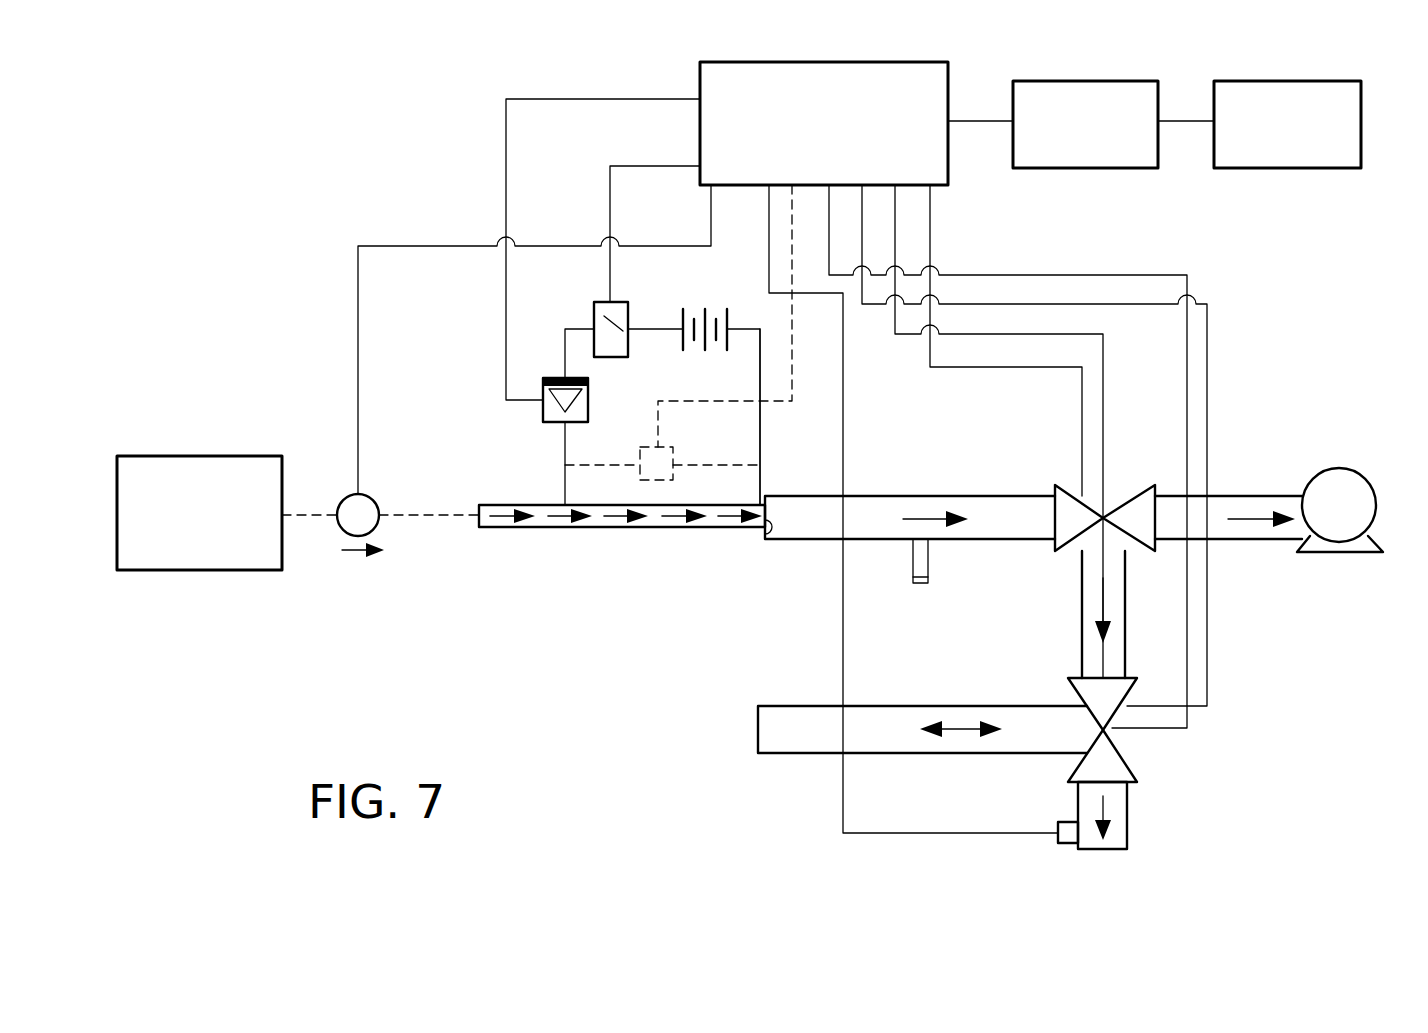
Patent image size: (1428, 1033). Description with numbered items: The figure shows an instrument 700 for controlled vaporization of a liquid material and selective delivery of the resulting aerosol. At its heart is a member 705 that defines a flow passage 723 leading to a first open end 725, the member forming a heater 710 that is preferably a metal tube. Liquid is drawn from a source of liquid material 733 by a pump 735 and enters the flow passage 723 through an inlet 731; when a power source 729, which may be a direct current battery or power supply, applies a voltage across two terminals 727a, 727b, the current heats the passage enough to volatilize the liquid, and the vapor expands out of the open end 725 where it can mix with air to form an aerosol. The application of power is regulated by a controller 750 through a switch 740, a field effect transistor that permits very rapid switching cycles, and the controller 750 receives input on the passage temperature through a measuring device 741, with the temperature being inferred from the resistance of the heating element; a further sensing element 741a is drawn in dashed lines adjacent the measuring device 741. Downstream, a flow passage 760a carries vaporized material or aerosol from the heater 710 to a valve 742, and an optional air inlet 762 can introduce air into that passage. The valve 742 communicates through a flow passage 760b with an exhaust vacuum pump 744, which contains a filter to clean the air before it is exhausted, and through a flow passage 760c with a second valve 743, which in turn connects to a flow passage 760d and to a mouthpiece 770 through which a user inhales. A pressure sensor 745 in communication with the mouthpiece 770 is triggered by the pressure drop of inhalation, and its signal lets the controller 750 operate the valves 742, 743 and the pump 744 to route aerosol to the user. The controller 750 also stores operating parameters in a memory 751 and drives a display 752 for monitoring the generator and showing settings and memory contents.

The instrument 700 is at (318, 152).
The member 705 is at (622, 486).
The heater 710 is at (540, 512).
The flow passage 723 is at (668, 530).
The open end 725 is at (771, 541).
The first terminal 727a is at (565, 483).
The second terminal 727b is at (760, 488).
The power source 729 is at (690, 330).
The inlet 731 is at (479, 518).
The source of liquid material 733 is at (200, 456).
The pump 735 is at (343, 500).
The switch 740 is at (594, 310).
The measuring device 741 is at (543, 411).
The sensor 741a is at (662, 456).
The valve 742 is at (1128, 485).
The valve 743 is at (1127, 698).
The exhaust vacuum pump 744 is at (1355, 490).
The pressure sensor 745 is at (1068, 843).
The controller 750 is at (819, 62).
The memory 751 is at (1085, 81).
The display 752 is at (1287, 81).
The flow passage 760a is at (1001, 496).
The flow passage 760b is at (1251, 496).
The flow passage 760c is at (1082, 598).
The flow passage 760d is at (996, 706).
The air inlet 762 is at (918, 583).
The mouthpiece 770 is at (1127, 822).